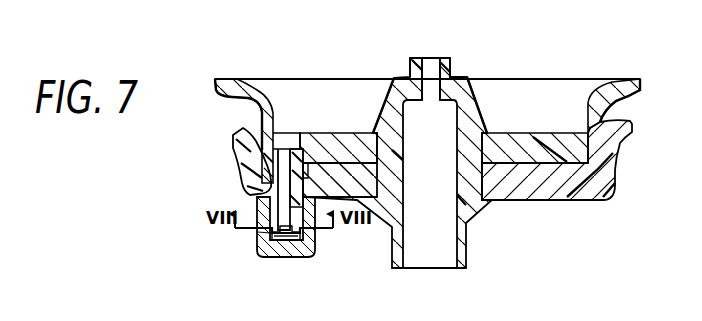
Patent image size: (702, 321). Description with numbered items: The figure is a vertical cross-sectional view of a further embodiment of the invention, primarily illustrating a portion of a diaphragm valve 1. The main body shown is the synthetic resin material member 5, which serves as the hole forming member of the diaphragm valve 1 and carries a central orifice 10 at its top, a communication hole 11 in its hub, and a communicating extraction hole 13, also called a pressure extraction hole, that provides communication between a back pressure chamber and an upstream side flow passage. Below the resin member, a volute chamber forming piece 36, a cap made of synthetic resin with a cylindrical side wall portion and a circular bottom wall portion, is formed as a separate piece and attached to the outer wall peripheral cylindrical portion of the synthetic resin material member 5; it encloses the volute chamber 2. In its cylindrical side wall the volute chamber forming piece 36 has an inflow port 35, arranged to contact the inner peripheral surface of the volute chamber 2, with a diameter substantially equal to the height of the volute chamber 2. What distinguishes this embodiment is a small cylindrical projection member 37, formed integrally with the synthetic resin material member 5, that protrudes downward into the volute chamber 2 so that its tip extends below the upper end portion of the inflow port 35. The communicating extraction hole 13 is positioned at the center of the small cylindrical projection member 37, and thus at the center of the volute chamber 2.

The diaphragm valve 1 is at (553, 192).
The volute chamber 2 is at (288, 242).
The synthetic resin material member 5 is at (533, 142).
The central orifice 10 is at (432, 65).
The communication hole 11 is at (447, 237).
The communicating extraction hole 13 is at (275, 188).
The inflow port 35 is at (258, 232).
The volute chamber forming piece 36 is at (269, 265).
The small cylindrical projection member 37 is at (264, 247).